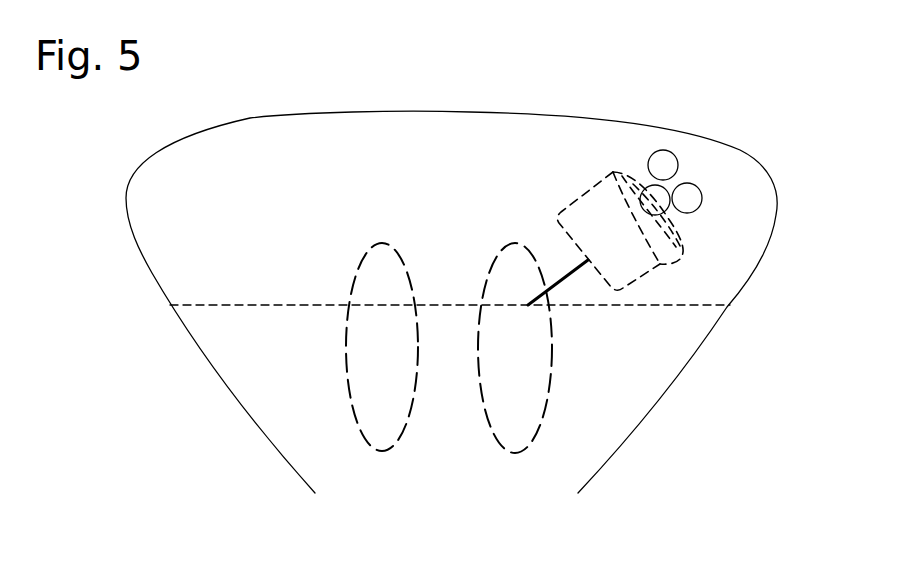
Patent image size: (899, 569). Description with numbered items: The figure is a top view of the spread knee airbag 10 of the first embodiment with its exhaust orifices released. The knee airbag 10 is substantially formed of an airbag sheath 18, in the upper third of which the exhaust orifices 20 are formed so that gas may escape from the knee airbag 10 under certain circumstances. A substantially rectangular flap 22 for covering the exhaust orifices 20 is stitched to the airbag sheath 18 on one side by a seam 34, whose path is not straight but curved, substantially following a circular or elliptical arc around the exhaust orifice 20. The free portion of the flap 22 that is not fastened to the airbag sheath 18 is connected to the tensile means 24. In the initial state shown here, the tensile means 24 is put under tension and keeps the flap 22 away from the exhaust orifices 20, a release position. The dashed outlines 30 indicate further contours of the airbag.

The knee airbag 10 is at (342, 110).
The airbag sheath 18 is at (150, 273).
The exhaust orifice 20 is at (680, 166).
The flap 22 is at (582, 192).
The tensile means 24 is at (563, 274).
The lens / opening contour 30 is at (449, 348).
The seam 34 is at (682, 250).